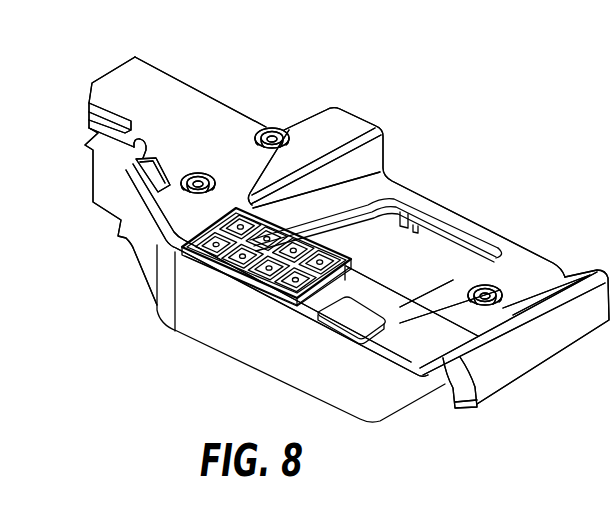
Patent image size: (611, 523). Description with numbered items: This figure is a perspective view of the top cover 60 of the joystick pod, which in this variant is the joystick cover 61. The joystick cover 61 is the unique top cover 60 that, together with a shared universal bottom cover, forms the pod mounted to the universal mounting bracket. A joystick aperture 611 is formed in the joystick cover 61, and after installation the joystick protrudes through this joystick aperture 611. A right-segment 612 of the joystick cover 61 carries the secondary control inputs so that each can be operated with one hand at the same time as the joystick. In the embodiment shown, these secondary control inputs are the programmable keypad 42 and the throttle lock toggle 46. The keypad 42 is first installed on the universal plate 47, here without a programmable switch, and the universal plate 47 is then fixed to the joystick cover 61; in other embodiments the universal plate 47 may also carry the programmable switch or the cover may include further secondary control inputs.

The top cover 60 is at (447, 156).
The joystick cover 61 is at (347, 232).
The joystick aperture 611 is at (432, 255).
The right-segment 612 is at (392, 343).
The programmable keypad 42 is at (218, 258).
The universal plate 47 is at (265, 285).
The throttle lock toggle 46 is at (345, 323).